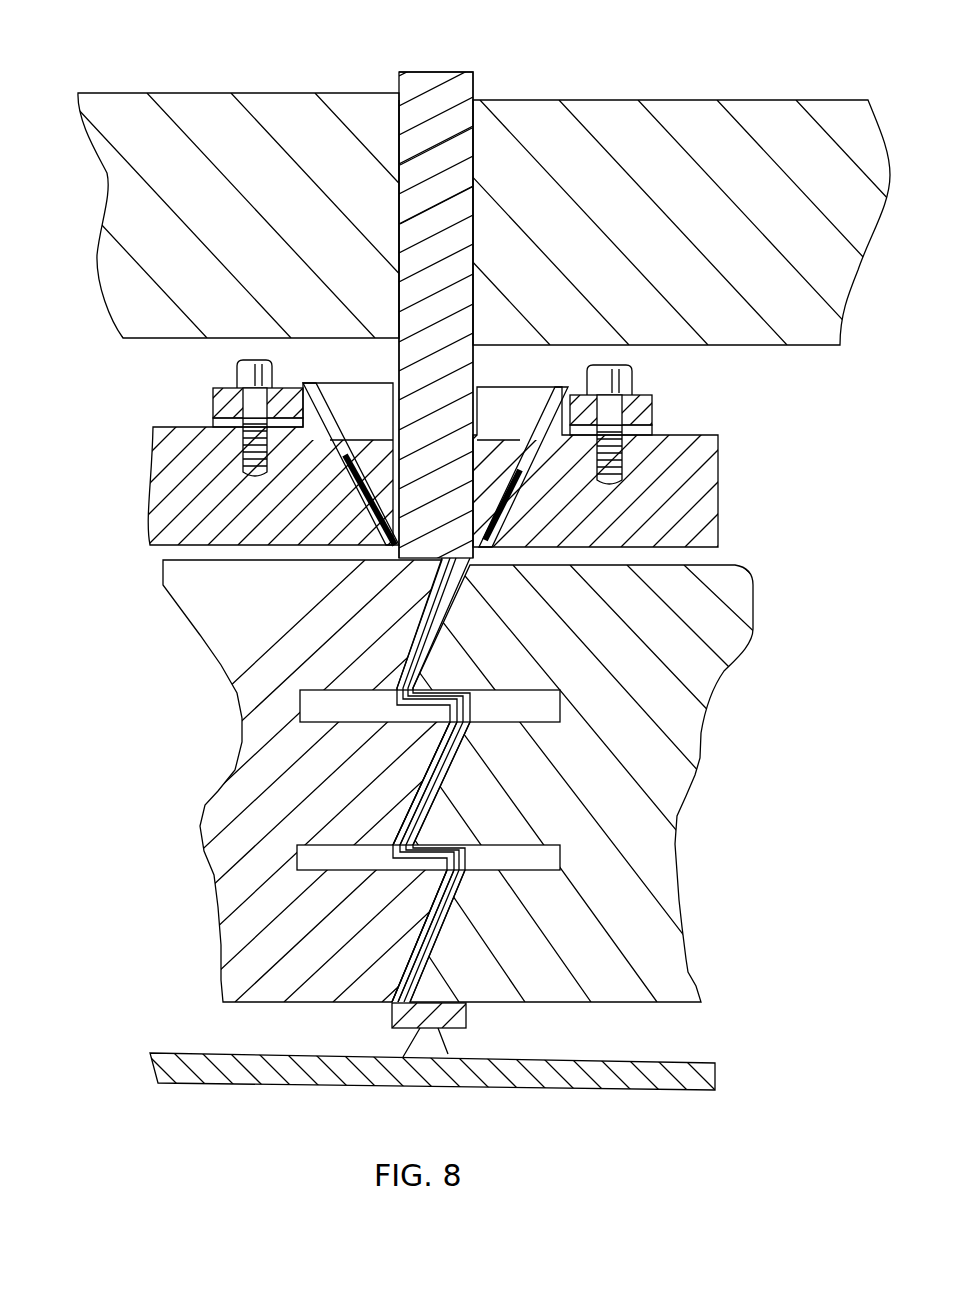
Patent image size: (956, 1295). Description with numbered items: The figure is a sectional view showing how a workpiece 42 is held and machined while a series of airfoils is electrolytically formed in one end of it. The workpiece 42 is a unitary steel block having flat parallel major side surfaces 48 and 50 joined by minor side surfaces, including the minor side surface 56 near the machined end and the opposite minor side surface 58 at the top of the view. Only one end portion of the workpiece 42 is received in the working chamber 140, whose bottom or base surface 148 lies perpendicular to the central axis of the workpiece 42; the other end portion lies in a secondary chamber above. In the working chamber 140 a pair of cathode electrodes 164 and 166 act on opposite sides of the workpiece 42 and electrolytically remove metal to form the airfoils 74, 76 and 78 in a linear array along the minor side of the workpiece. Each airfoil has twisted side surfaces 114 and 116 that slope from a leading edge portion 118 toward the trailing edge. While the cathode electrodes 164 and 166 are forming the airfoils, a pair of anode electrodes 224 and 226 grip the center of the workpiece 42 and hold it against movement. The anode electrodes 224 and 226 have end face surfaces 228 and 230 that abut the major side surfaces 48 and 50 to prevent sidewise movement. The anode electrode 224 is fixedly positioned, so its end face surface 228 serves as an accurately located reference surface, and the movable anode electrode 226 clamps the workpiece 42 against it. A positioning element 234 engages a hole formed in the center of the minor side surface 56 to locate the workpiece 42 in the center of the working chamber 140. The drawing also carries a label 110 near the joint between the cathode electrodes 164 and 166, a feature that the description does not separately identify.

The anode electrode 224 is at (152, 50).
The anode electrode 226 is at (848, 60).
The workpiece 42 is at (488, 88).
The minor side surface 58 is at (400, 74).
The major side surface 48 is at (468, 156).
The major side surface 50 is at (390, 237).
The end face surface 228 is at (400, 310).
The end face surface 230 is at (480, 250).
The working chamber 140 is at (680, 557).
The cathode electrode 164 is at (720, 746).
The cathode electrode 166 is at (186, 842).
The airfoil 78 is at (442, 655).
The airfoil 76 is at (520, 790).
The airfoil 74 is at (517, 950).
The key strip 110 is at (455, 698).
The twisted side surface 114 is at (456, 746).
The twisted side surface 116 is at (440, 758).
The leading edge portion 118 is at (430, 850).
The minor side surface 56 is at (398, 1028).
The positioning element 234 is at (447, 1047).
The base surface 148 is at (636, 1068).